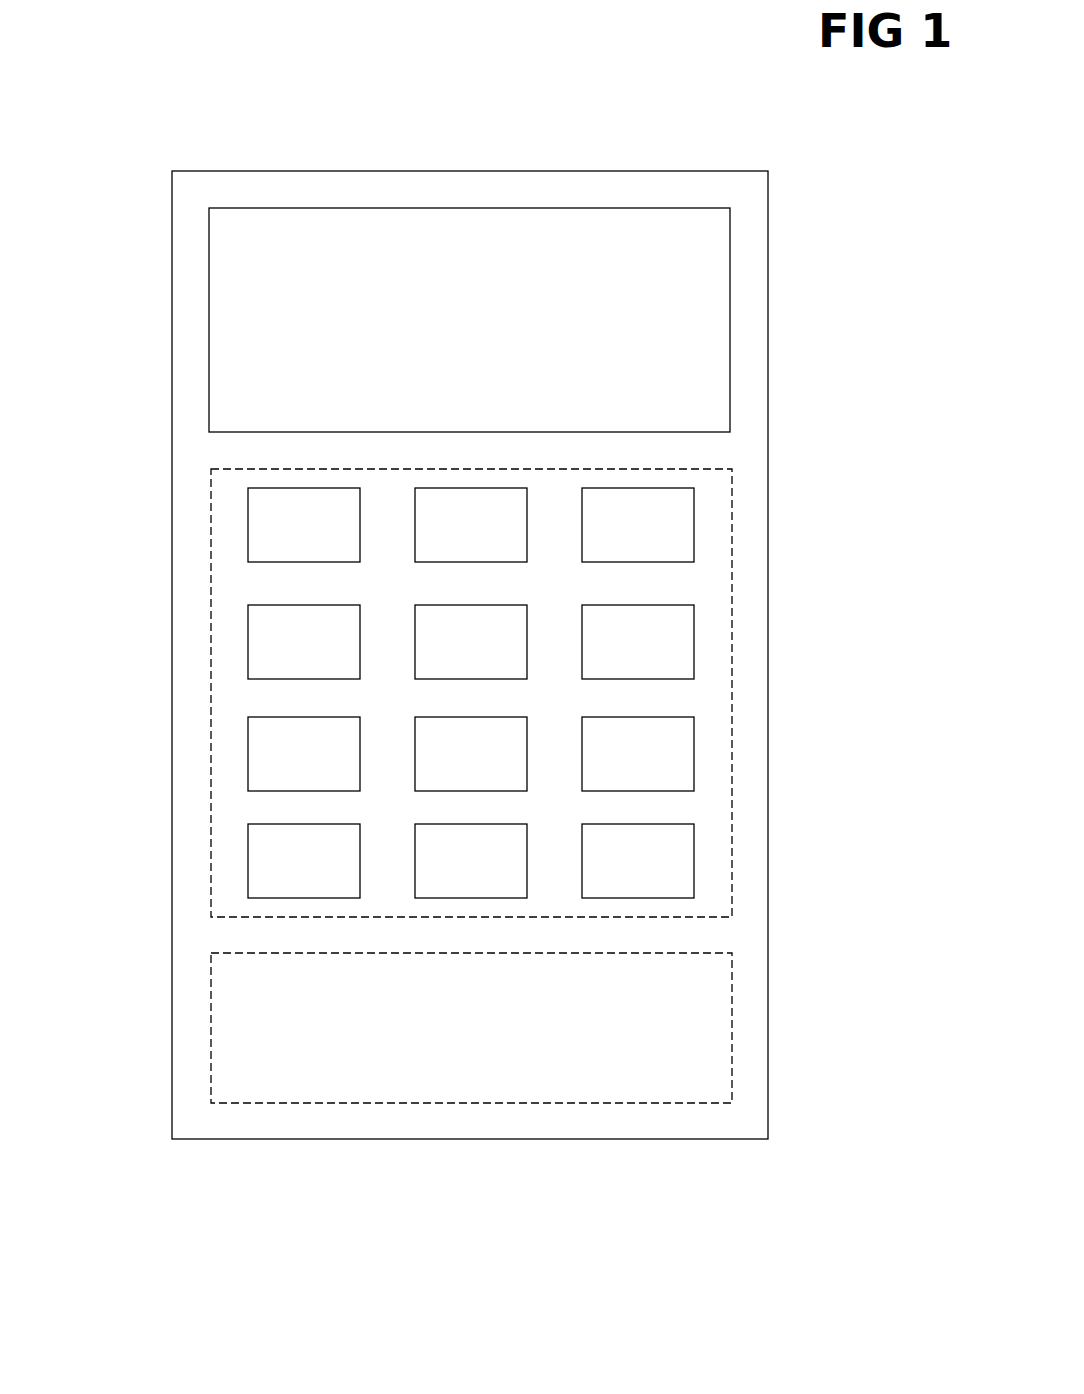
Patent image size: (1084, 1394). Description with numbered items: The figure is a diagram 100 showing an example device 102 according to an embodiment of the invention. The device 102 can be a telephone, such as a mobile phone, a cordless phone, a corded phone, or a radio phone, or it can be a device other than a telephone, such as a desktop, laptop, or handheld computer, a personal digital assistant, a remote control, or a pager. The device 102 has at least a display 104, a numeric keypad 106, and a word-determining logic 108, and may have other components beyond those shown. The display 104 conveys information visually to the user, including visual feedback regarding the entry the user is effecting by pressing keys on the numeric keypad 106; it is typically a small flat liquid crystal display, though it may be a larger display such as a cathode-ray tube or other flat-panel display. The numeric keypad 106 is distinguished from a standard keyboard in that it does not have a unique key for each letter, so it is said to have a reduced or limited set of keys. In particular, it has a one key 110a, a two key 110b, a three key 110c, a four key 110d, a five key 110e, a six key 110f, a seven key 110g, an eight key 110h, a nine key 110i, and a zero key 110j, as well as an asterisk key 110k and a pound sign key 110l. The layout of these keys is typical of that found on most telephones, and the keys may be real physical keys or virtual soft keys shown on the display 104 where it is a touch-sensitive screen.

The diagram 100 is at (324, 1268).
The device 102 is at (172, 970).
The display 104 is at (209, 323).
The numeric keypad 106 is at (211, 692).
The word-determining logic 108 is at (211, 1030).
The one key 110a is at (247, 528).
The two key 110b is at (415, 528).
The three key 110c is at (582, 525).
The four key 110d is at (247, 643).
The five key 110e is at (415, 643).
The six key 110f is at (582, 641).
The seven key 110g is at (247, 755).
The eight key 110h is at (415, 758).
The nine key 110i is at (694, 753).
The zero key 110j is at (565, 818).
The asterisk key 110k is at (247, 863).
The pound sign key 110l is at (694, 860).